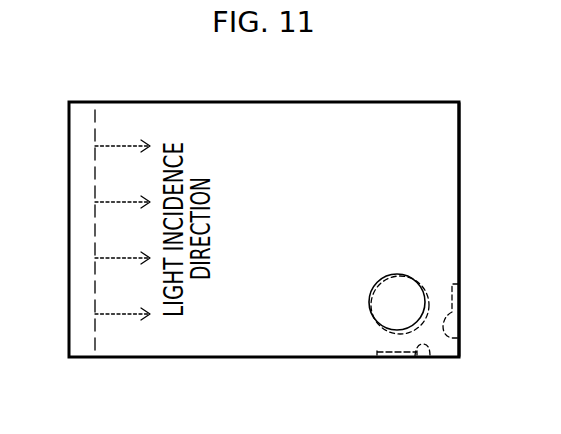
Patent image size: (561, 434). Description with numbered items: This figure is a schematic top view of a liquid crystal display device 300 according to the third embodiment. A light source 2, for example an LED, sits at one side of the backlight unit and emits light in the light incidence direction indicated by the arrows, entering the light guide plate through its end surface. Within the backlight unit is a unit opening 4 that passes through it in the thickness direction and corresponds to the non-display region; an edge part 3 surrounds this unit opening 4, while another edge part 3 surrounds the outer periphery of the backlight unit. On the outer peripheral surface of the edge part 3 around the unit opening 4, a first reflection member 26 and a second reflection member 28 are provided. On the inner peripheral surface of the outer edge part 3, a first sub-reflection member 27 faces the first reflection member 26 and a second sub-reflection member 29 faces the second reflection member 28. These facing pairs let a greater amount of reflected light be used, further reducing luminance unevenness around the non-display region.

The liquid crystal display device 300 is at (398, 97).
The edge part 3 is at (460, 137).
The light source 2 is at (80, 232).
The unit opening 4 is at (372, 311).
The first reflection member 26 is at (428, 290).
The first sub-reflection member 27 is at (460, 340).
The second reflection member 28 is at (381, 333).
The second sub-reflection member 29 is at (430, 357).